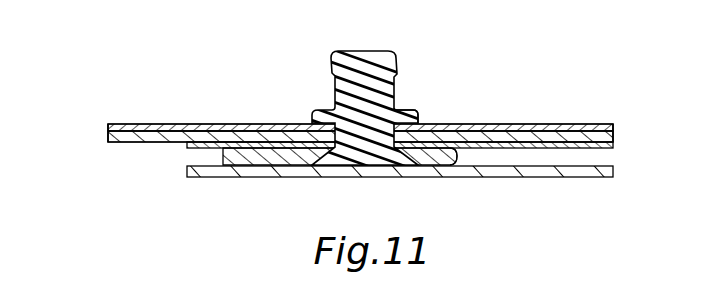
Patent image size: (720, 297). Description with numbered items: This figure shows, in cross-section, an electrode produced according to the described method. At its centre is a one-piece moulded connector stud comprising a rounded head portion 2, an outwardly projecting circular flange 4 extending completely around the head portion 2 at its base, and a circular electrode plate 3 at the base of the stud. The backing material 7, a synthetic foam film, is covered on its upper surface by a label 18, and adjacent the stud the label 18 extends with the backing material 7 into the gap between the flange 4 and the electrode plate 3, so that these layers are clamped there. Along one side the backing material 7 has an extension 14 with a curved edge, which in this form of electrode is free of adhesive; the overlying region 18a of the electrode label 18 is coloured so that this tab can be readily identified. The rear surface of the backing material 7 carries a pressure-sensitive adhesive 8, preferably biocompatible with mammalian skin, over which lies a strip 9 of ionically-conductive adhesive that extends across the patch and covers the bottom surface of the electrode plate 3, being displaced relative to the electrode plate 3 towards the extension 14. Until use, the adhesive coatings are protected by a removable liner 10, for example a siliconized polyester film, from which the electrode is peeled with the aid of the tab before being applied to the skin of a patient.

The head portion 2 is at (397, 54).
The flange 4 is at (413, 112).
The label 18 is at (518, 125).
The overlying region of the electrode label 18a is at (115, 125).
The extension 14 is at (108, 135).
The backing material 7 is at (613, 127).
The pressure-sensitive adhesive 8 is at (613, 147).
The electrode plate 3 is at (312, 160).
The strip of ionically-conductive adhesive 9 is at (458, 160).
The removable liner 10 is at (583, 178).